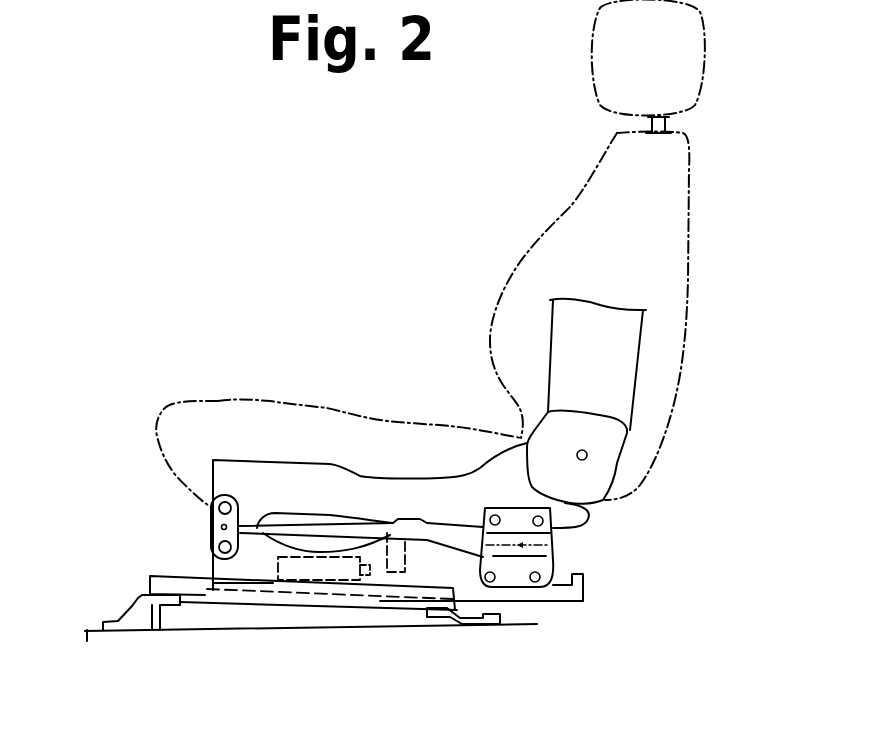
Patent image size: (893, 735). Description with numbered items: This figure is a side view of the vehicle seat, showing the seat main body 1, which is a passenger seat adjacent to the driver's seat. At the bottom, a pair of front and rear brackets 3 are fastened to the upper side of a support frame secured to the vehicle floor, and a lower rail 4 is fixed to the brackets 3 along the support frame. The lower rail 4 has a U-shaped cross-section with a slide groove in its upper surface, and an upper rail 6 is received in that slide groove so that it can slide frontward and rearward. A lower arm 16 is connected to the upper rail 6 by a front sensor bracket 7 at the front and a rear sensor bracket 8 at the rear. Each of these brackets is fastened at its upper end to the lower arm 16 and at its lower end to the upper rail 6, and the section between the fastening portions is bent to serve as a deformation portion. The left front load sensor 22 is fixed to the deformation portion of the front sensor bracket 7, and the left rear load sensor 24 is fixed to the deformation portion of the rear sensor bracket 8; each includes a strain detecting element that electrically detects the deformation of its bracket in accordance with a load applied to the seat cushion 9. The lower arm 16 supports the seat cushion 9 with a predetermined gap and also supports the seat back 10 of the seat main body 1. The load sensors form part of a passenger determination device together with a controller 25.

The seat main body 1 is at (508, 240).
The seat back 10 is at (688, 253).
The seat cushion 9 is at (217, 400).
The rear sensor bracket 8 is at (513, 506).
The lower arm 16 is at (323, 480).
The front sensor bracket 7 is at (223, 497).
The left front load sensor 22 is at (213, 518).
The left rear load sensor 24 is at (553, 548).
The controller 25 is at (280, 567).
The lower rail 4 is at (152, 580).
The bracket 3 is at (117, 618).
The upper rail 6 is at (563, 603).